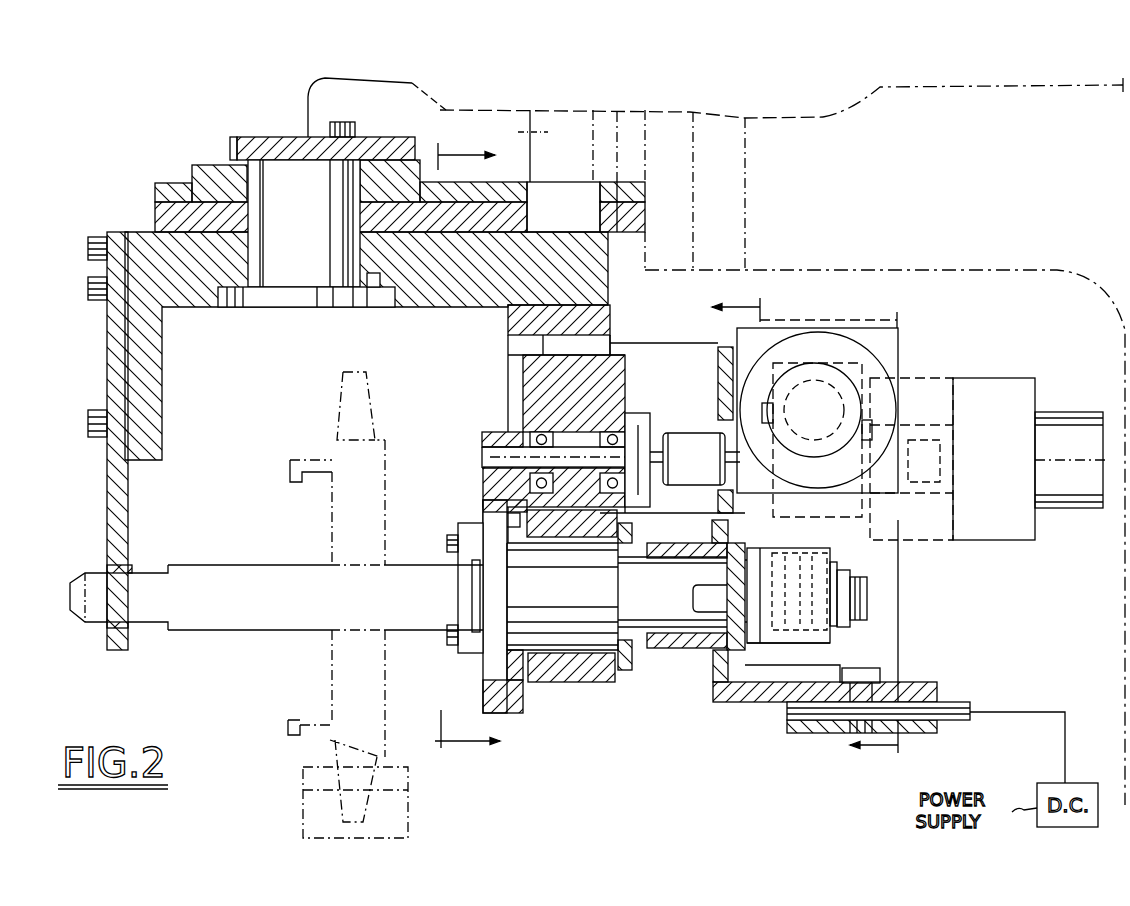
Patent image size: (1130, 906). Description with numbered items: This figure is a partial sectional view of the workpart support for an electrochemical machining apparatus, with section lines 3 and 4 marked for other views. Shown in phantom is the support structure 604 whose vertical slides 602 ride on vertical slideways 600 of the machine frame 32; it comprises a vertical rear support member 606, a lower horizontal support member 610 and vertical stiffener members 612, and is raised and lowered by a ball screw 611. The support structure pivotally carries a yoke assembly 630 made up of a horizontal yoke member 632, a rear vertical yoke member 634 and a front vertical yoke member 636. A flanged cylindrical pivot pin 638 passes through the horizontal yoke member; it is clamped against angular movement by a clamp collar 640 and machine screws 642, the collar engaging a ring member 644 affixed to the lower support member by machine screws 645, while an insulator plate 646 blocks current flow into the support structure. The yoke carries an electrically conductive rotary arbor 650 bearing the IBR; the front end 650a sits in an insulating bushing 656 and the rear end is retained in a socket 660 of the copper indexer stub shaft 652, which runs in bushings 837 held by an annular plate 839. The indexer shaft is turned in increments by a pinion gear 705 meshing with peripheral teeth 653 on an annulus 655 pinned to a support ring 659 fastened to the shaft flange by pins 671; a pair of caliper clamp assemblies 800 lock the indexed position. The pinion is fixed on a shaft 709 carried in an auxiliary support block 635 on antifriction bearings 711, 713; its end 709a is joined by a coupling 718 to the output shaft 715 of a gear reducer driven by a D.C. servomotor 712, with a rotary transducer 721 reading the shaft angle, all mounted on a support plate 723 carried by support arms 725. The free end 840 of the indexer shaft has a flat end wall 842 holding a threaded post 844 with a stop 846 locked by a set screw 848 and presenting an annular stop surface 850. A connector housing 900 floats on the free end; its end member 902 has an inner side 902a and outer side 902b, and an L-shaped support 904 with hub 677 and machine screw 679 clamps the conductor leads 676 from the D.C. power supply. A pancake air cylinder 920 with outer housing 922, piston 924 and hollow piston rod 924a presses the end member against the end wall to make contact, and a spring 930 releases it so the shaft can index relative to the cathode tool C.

The machine frame 32 is at (872, 94).
The vertical slideways 600 is at (742, 110).
The vertical slide 602 is at (728, 118).
The support structure 604 is at (446, 110).
The vertical rear support member 606 is at (628, 114).
The lower horizontal support member 610 is at (152, 200).
The ball screw 611 is at (513, 133).
The vertical stiffener member 612 is at (506, 111).
The yoke assembly 630 is at (213, 662).
The horizontal yoke member 632 is at (193, 307).
The rear vertical yoke member 634 is at (556, 303).
The auxiliary support block 635 is at (527, 366).
The front vertical yoke member 636 is at (107, 350).
The pivot pin 638 is at (310, 224).
The clamp collar 640 is at (265, 135).
The machine screws 642 is at (345, 122).
The ring member 644 is at (203, 165).
The machine screws 645 is at (232, 130).
The insulator plate 646 is at (155, 215).
The rotary arbor 650 is at (307, 562).
The front end of arbor shaft 650a is at (100, 612).
The indexer stub shaft 652 is at (540, 594).
The peripheral teeth 653 is at (513, 717).
The ring or annulus 655 is at (523, 660).
The electrical insulating bushing 656 is at (107, 570).
The support ring 659 is at (483, 690).
The socket 660 is at (462, 637).
The pins 671 is at (482, 500).
The electrical conductor leads 676 is at (968, 712).
The hub 677 is at (937, 733).
The machine screw 679 is at (850, 735).
The pinion gear 705 is at (492, 440).
The shaft 709 is at (492, 455).
The shaft end 709a is at (643, 473).
The antifriction bearing 711 is at (537, 432).
The D.C. servomotor 712 is at (833, 330).
The antifriction bearing 713 is at (617, 433).
The output shaft of gear reducer 715 is at (737, 447).
The coupling 718 is at (686, 433).
The rotary transducer 721 is at (1010, 378).
The support plate 723 is at (716, 357).
The support arms 725 is at (637, 350).
The caliper clamp assembly 800 is at (440, 548).
The bushings 837 is at (530, 685).
The annular plate 839 is at (627, 680).
The free end of indexer shaft 840 is at (676, 597).
The flat end wall 842 is at (725, 633).
The threaded connector stud or post 844 is at (867, 597).
The stop or knob 846 is at (857, 618).
The set screw 848 is at (853, 623).
The inner annular stop surface 850 is at (850, 582).
The electrical coupling or connector housing 900 is at (672, 652).
The annular flat end member 902 is at (715, 702).
The inner side of end member 902a is at (730, 532).
The outer annular side of end member 902b is at (727, 702).
The L-shaped support 904 is at (718, 717).
The pancake air cylinder 920 is at (858, 553).
The outer housing of cylinder 922 is at (808, 553).
The piston 924 is at (758, 547).
The hollow piston rod 924a is at (837, 567).
The spring 930 is at (823, 647).
The section line 3- 3 is at (467, 453).
The section line 4- 4 is at (805, 532).
The integral bladed rotor IBR is at (327, 453).
The cathode tool C is at (400, 812).